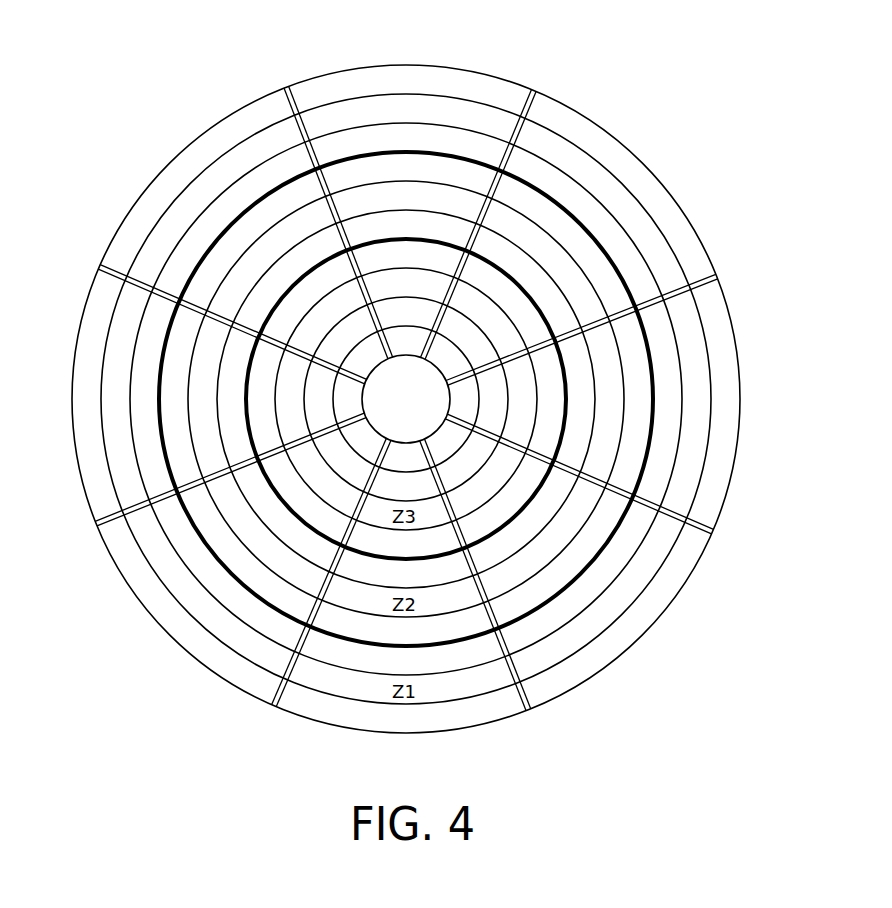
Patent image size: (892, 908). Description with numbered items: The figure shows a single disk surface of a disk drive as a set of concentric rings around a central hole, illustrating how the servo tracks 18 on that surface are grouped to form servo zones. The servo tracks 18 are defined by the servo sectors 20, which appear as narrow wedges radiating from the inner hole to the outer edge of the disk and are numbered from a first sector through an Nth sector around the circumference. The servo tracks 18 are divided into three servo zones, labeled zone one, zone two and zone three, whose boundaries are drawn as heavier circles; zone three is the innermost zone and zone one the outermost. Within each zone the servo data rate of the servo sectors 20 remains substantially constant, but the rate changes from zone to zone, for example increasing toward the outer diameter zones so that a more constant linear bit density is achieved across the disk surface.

The servo tracks 18 is at (403, 110).
The servo sectors 20 is at (417, 400).